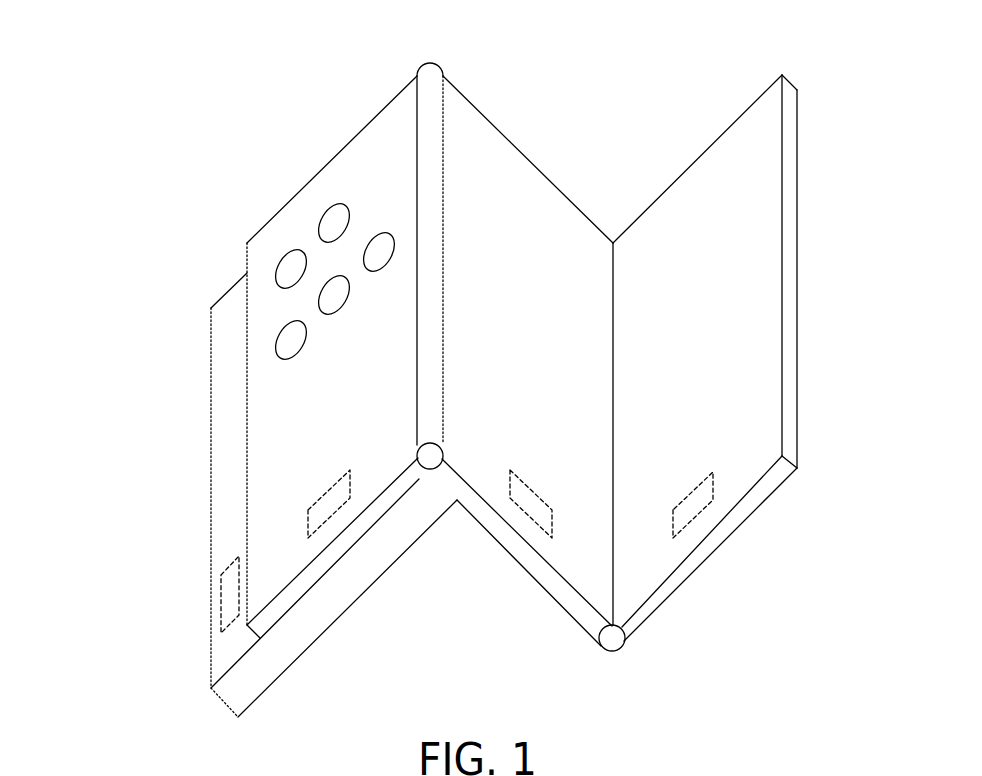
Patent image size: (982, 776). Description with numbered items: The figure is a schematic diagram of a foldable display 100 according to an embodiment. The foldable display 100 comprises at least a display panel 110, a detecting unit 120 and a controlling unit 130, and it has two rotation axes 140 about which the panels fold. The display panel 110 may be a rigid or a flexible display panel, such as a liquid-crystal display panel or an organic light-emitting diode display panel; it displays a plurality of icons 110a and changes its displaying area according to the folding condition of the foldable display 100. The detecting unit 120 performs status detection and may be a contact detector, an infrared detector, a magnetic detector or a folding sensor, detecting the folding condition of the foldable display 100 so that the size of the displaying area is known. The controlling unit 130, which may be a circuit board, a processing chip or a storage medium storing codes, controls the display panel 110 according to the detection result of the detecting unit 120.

The foldable display 100 is at (90, 57).
The display panel 110 is at (387, 118).
The icons 110a is at (322, 214).
The detecting unit 120 is at (327, 495).
The controlling unit 130 is at (228, 595).
The rotation axes 140 is at (424, 460).